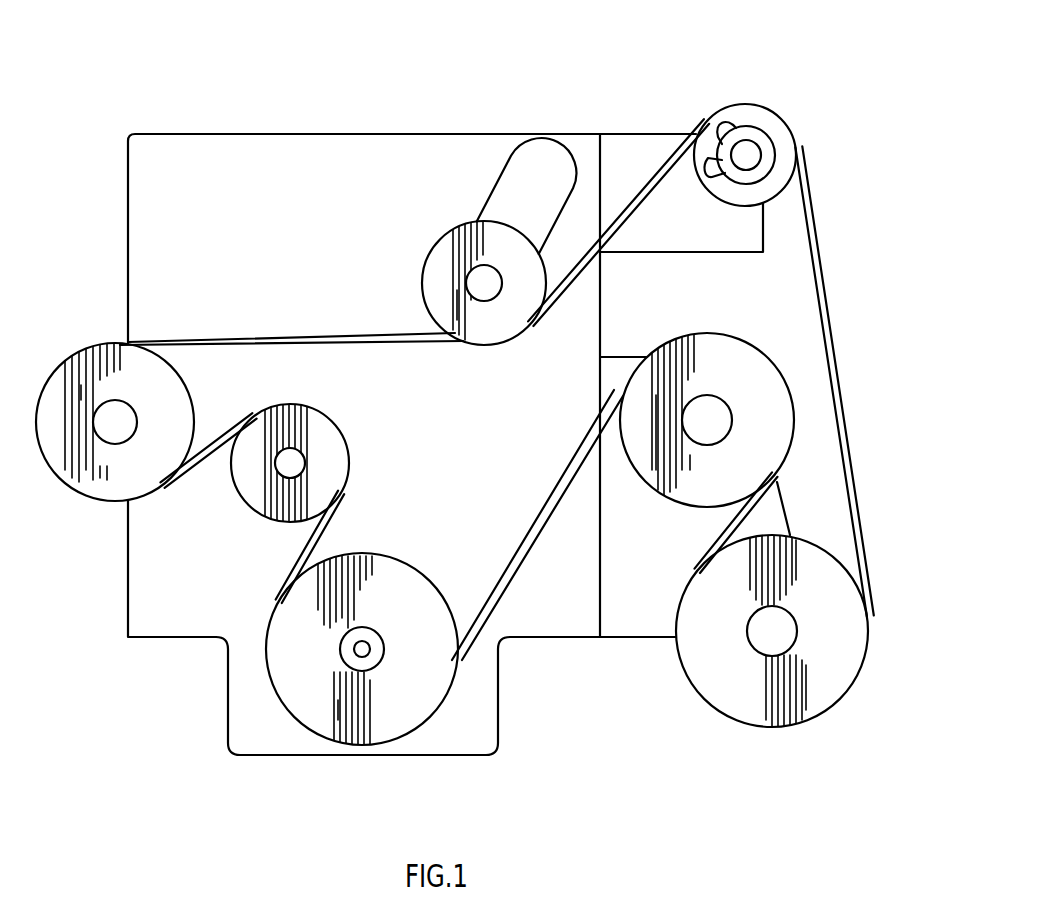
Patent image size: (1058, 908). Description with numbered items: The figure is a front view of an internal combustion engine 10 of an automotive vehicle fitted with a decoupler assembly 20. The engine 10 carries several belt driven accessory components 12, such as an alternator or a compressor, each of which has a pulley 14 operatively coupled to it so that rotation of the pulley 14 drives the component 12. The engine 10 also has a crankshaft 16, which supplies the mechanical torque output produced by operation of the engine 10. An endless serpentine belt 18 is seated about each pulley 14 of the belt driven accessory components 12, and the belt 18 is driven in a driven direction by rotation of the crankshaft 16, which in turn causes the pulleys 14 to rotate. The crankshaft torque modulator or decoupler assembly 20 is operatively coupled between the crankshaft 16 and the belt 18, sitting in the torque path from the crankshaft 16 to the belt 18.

The internal combustion engine 10 is at (549, 99).
The belt driven accessory components 12 is at (761, 128).
The pulley 14 is at (88, 346).
The crankshaft 16 is at (379, 618).
The endless serpentine belt 18 is at (553, 493).
The decoupler assembly 20 is at (289, 719).